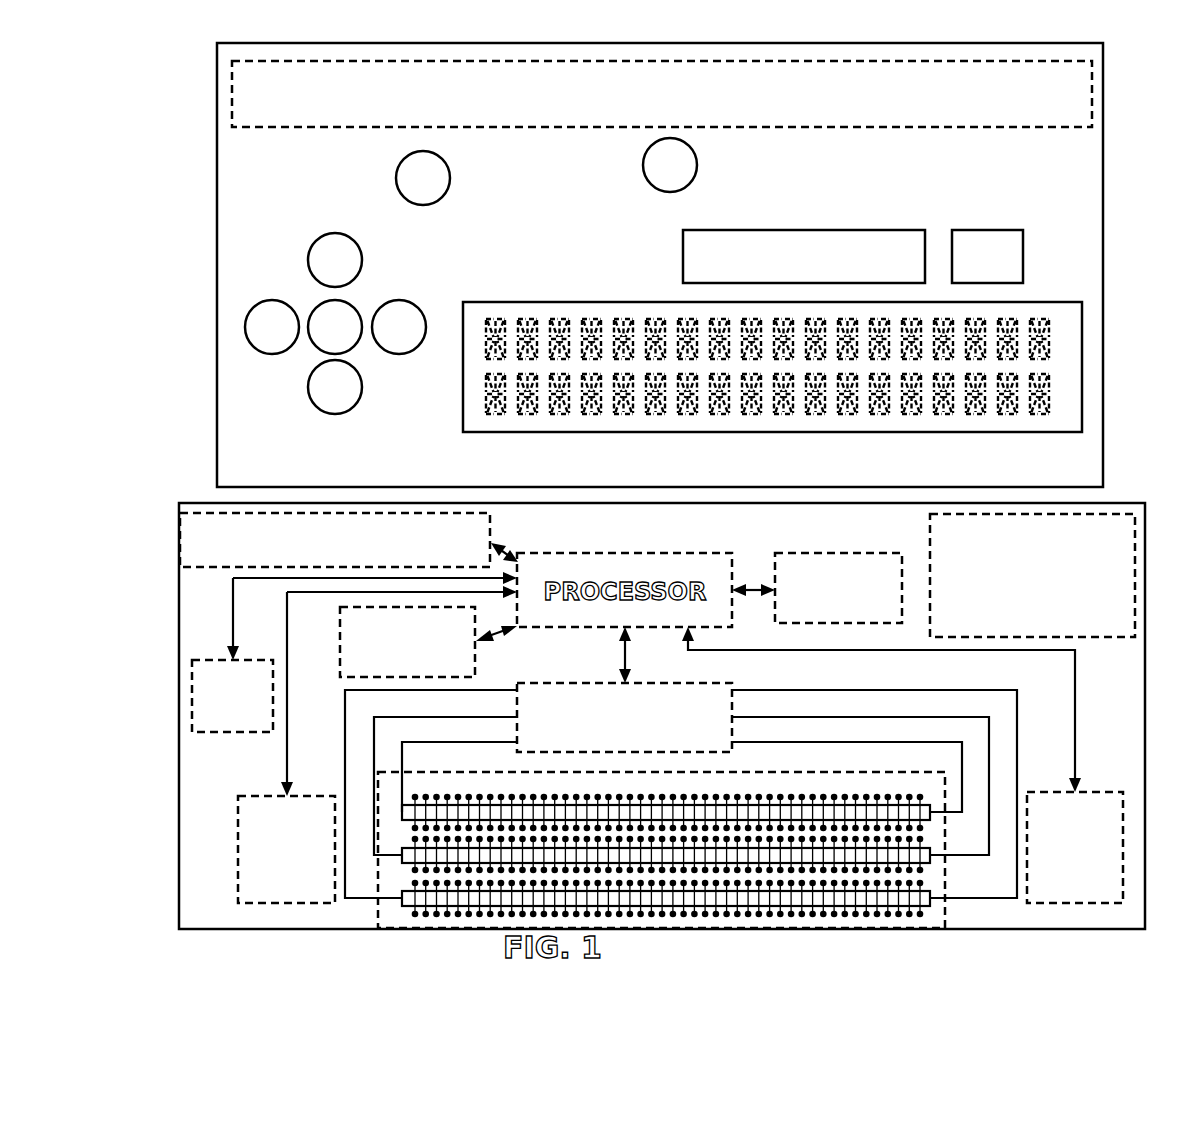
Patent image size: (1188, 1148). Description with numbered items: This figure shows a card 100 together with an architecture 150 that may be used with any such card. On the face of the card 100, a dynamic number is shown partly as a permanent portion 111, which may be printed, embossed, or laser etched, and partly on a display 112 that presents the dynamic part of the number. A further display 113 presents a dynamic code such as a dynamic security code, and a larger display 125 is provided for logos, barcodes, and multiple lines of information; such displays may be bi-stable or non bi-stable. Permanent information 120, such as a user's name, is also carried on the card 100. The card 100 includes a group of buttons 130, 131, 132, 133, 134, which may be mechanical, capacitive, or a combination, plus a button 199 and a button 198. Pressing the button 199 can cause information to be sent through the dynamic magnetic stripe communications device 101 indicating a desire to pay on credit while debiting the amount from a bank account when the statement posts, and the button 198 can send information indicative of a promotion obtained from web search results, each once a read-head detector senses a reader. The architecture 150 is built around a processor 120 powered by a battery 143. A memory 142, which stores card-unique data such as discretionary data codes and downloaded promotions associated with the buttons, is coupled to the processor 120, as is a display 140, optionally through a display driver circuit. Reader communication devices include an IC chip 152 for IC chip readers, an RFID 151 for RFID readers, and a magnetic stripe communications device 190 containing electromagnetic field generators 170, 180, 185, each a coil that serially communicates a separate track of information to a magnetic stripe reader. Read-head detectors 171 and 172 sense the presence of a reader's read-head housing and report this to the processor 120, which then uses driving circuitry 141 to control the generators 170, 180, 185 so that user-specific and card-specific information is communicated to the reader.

The card 100 is at (217, 268).
The dynamic magnetic stripe communications device 101 is at (232, 122).
The button 199 is at (414, 152).
The button 198 is at (652, 150).
The button 133 is at (330, 234).
The button 131 is at (273, 300).
The button 130 is at (334, 301).
The button 132 is at (439, 298).
The button 134 is at (310, 387).
The permanent portion 111 is at (605, 270).
The display 112 is at (745, 278).
The display 113 is at (992, 282).
The display 125 is at (1077, 434).
The permanent information 120 is at (274, 456).
The architecture 150 is at (181, 712).
The memory 142 is at (181, 523).
The IC chip 152 is at (226, 660).
The RFID 151 is at (344, 634).
The display 140 is at (791, 553).
The battery 143 is at (1134, 636).
The driving circuitry 141 is at (566, 684).
The magnetic stripe communications device 190 is at (681, 809).
The electromagnetic field generator 170 is at (545, 797).
The electromagnetic field generator 180 is at (405, 848).
The electromagnetic field generator 185 is at (405, 891).
The read-head detector 171 is at (272, 796).
The read-head detector 172 is at (1028, 897).